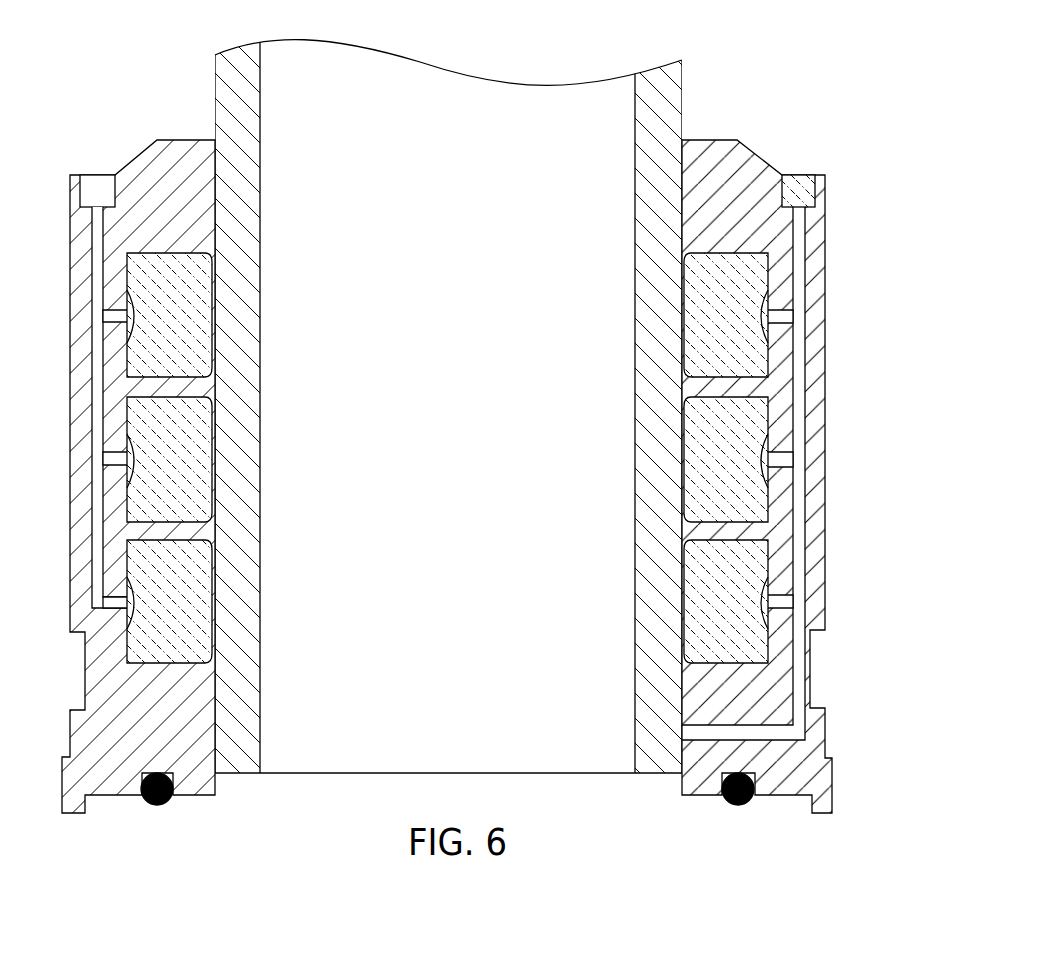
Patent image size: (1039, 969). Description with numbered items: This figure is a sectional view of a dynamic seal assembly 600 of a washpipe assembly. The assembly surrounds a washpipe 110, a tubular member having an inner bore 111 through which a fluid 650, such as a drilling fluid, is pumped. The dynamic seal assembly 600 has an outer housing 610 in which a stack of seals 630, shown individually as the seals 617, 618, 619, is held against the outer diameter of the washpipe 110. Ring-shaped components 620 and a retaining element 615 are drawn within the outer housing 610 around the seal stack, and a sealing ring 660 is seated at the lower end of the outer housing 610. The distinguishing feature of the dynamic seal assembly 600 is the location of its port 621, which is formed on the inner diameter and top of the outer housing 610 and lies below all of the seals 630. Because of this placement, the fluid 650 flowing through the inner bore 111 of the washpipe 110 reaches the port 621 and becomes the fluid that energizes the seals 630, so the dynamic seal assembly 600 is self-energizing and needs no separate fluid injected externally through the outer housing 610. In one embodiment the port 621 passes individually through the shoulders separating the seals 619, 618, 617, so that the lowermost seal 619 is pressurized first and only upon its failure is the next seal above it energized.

The washpipe 110 is at (683, 92).
The inner bore 111 is at (260, 68).
The dynamic seal assembly 600 is at (932, 98).
The outer housing 610 is at (826, 200).
The retaining flange 615 is at (800, 175).
The seal 617 is at (716, 252).
The seal 618 is at (716, 395).
The seal 619 is at (716, 540).
The spacer ring 620 is at (799, 247).
The port 621 is at (800, 220).
The seals 630 is at (756, 275).
The fluid 650 is at (678, 790).
The O-ring seal 660 is at (733, 807).